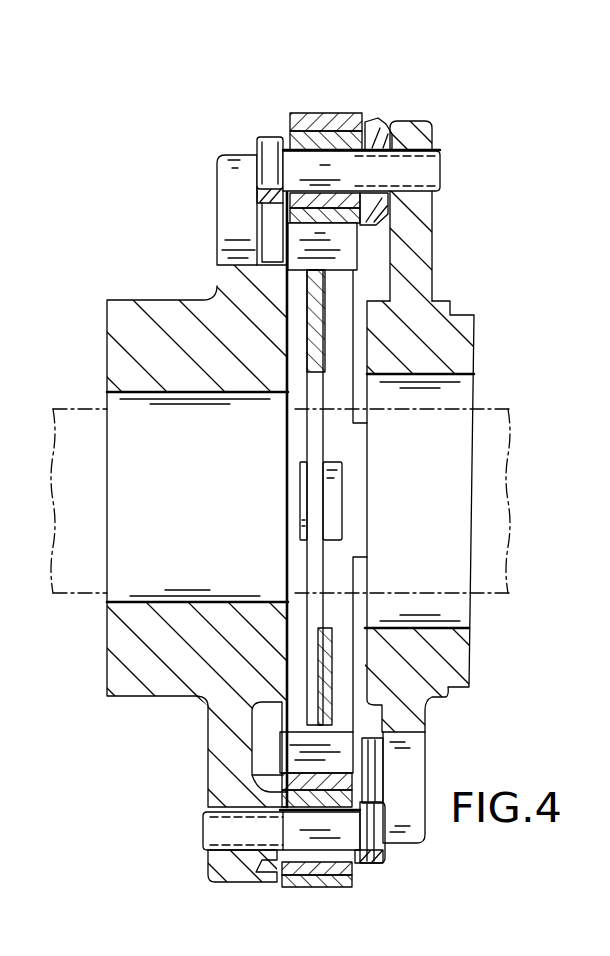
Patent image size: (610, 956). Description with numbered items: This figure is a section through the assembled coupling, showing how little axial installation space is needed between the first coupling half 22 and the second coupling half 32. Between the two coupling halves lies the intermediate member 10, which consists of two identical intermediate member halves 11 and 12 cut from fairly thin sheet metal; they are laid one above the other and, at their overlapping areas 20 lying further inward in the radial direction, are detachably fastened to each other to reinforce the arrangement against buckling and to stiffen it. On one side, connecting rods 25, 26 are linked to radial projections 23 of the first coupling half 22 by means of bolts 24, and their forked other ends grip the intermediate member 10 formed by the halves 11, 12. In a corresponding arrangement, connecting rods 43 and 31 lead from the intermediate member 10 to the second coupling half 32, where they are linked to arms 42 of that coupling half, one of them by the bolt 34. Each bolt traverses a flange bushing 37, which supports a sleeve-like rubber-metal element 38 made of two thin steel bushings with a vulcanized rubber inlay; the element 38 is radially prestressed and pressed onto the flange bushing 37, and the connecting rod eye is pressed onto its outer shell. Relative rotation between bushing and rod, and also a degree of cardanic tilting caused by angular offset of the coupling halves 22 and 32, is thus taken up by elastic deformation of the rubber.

The intermediate member 10 is at (249, 497).
The intermediate member half 11 is at (317, 624).
The intermediate member half 12 is at (300, 376).
The overlapping areas 20 is at (350, 479).
The first coupling half 22 is at (457, 347).
The radial projections 23 is at (420, 226).
The bolts 24 is at (430, 165).
The connecting rod 25 is at (300, 745).
The connecting rod 26 is at (312, 108).
The connecting rod 31 is at (325, 885).
The second coupling half 32 is at (138, 334).
The bolt 34 is at (215, 835).
The flange bushing 37 is at (378, 128).
The rubber-metal element 38 is at (290, 128).
The arms 42 is at (228, 193).
The connecting rod 43 is at (340, 252).